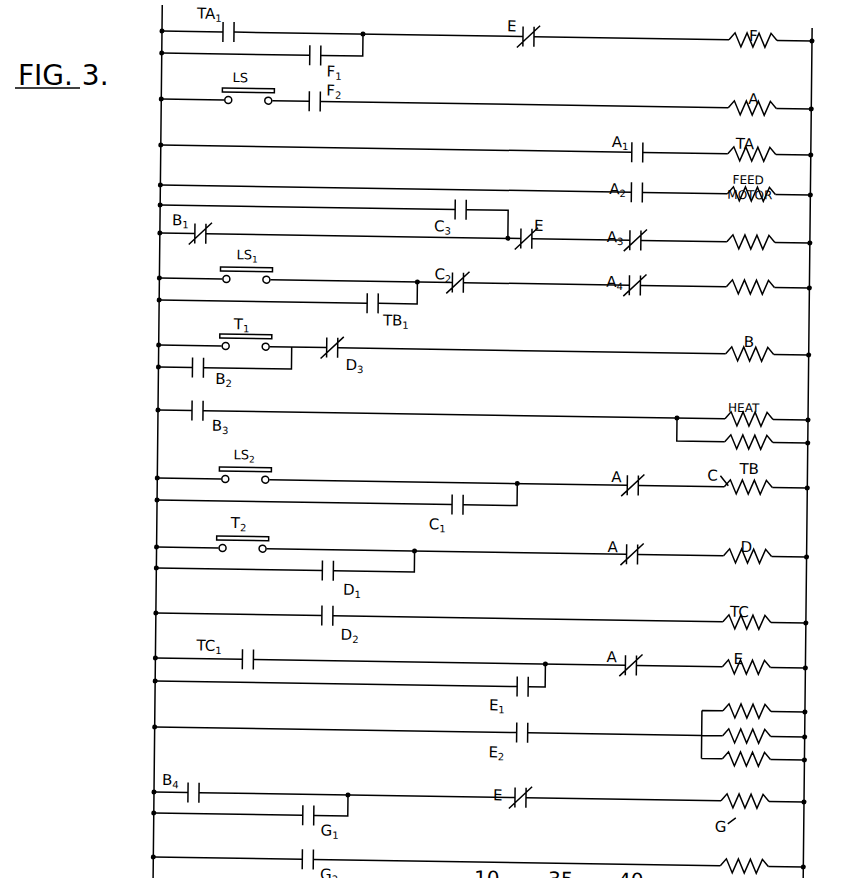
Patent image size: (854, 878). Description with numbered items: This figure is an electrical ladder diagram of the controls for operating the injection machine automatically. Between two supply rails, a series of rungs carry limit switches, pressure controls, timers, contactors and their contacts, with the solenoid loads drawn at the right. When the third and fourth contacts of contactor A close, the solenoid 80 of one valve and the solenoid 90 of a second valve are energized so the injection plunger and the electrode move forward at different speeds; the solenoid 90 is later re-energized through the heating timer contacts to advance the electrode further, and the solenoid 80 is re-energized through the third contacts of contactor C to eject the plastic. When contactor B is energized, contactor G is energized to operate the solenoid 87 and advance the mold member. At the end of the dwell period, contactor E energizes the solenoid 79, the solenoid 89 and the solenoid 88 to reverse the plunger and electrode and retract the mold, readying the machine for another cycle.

The solenoid 80 is at (768, 223).
The solenoid 90 is at (768, 270).
The solenoid 79 is at (765, 704).
The solenoid 89 is at (774, 735).
The solenoid 88 is at (769, 762).
The solenoid 87 is at (771, 845).